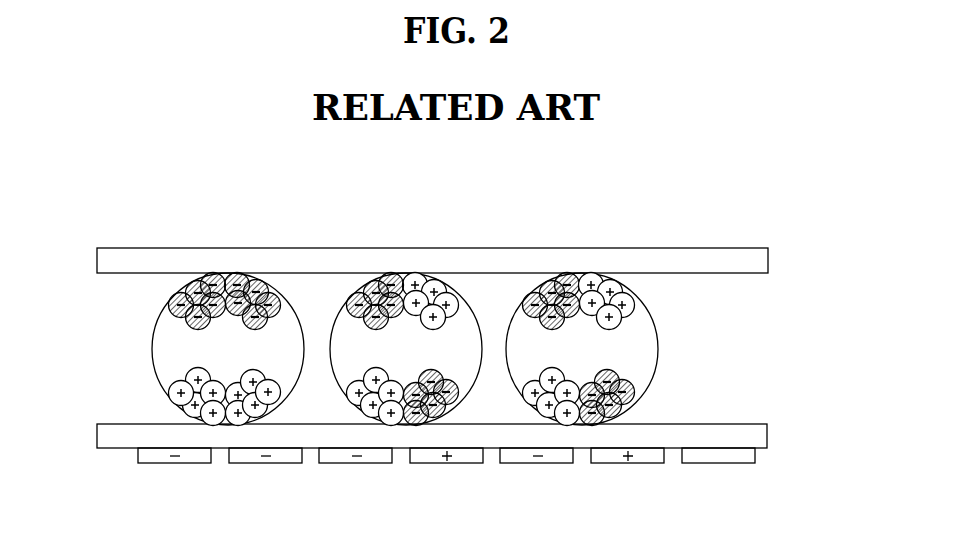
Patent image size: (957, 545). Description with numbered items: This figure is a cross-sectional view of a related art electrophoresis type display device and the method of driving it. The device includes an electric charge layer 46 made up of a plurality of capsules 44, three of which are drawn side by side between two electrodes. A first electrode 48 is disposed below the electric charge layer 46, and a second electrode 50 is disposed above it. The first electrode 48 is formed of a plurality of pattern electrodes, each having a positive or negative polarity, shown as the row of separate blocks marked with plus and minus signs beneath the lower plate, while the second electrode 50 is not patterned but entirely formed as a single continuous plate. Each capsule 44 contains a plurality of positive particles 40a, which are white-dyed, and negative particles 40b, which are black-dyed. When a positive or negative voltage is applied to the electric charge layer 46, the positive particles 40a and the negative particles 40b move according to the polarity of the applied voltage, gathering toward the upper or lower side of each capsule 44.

The positive particles 40a is at (178, 387).
The negative particles 40b is at (391, 281).
The capsule 44 is at (462, 294).
The electric charge layer 46 is at (732, 343).
The first electrode 48 is at (752, 464).
The second electrode 50 is at (757, 258).